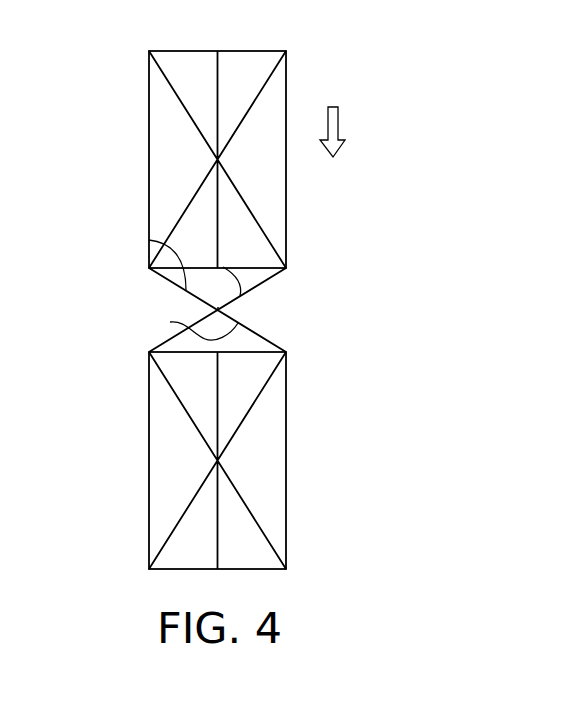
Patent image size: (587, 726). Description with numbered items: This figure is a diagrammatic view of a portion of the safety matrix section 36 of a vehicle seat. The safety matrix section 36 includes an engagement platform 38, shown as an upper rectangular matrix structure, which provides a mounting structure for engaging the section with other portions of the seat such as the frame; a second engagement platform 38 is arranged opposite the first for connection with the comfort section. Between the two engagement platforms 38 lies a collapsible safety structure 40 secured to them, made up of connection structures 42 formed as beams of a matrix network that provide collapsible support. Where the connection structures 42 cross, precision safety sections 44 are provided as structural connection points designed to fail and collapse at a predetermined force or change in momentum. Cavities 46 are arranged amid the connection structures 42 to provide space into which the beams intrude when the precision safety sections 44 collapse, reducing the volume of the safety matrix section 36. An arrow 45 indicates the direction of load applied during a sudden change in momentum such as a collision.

The safety matrix section 36 is at (325, 225).
The engagement platform 38 is at (296, 67).
The collapsible safety structure 40 is at (285, 314).
The connection structures 42 is at (223, 267).
The precision safety sections 44 is at (203, 312).
The arrow 45 is at (338, 125).
The cavities 46 is at (168, 290).